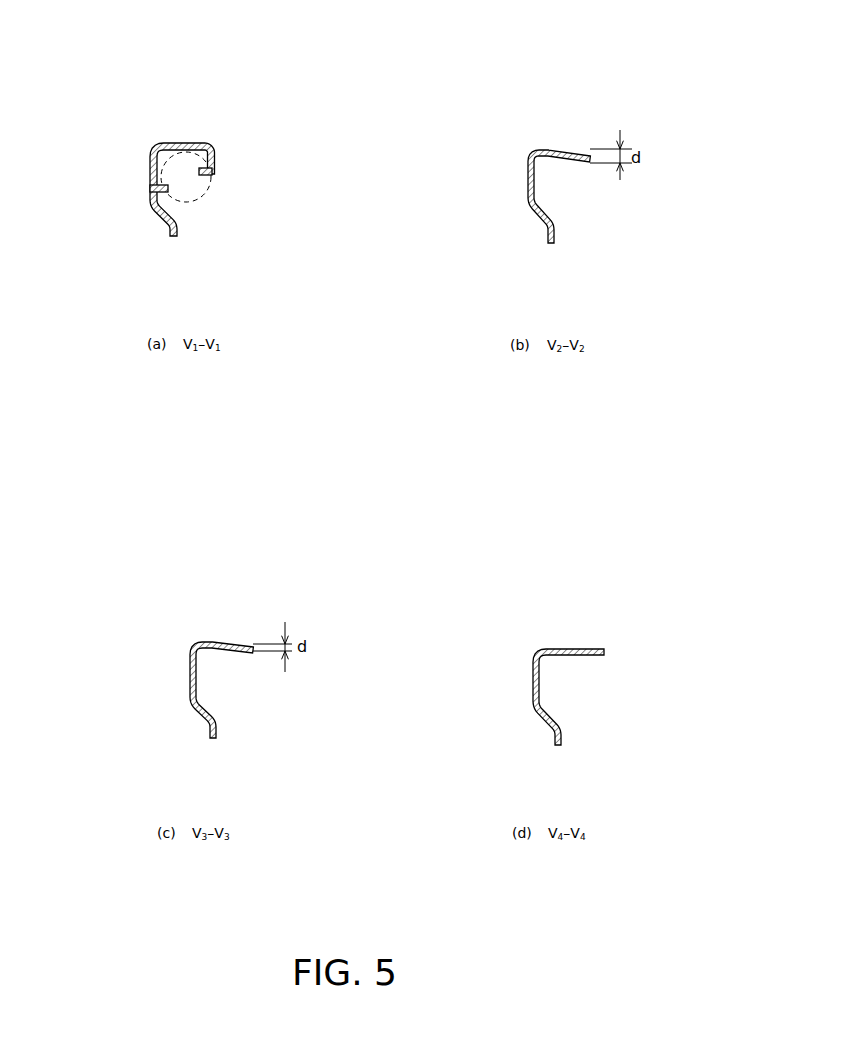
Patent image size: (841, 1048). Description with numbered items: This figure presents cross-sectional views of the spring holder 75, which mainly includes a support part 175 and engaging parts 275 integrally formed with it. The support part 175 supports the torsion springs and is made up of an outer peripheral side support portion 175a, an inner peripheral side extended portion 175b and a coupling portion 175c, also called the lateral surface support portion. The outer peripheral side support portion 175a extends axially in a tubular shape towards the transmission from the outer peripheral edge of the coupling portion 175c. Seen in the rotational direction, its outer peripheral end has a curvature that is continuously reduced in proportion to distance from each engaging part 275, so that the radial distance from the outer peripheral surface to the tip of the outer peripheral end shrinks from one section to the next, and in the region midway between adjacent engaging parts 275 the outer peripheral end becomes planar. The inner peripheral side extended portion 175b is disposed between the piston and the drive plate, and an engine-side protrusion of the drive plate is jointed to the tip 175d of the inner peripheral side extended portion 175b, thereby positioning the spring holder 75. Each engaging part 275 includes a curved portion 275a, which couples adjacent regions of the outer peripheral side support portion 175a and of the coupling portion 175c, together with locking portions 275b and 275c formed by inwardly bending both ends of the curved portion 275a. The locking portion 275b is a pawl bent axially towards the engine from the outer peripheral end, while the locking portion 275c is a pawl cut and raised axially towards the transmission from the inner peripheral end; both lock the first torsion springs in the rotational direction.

The engaging part 275 is at (196, 85).
The curved portion 275a is at (160, 144).
The locking portion 275b is at (208, 188).
The locking portion 275c is at (168, 196).
The tip of the inner peripheral side extended portion 175d is at (175, 237).
The spring holder 75 is at (512, 132).
The support part 175 is at (252, 582).
The outer peripheral side support portion 175a is at (563, 149).
The coupling portion 175c is at (528, 190).
The inner peripheral side extended portion 175b is at (548, 240).